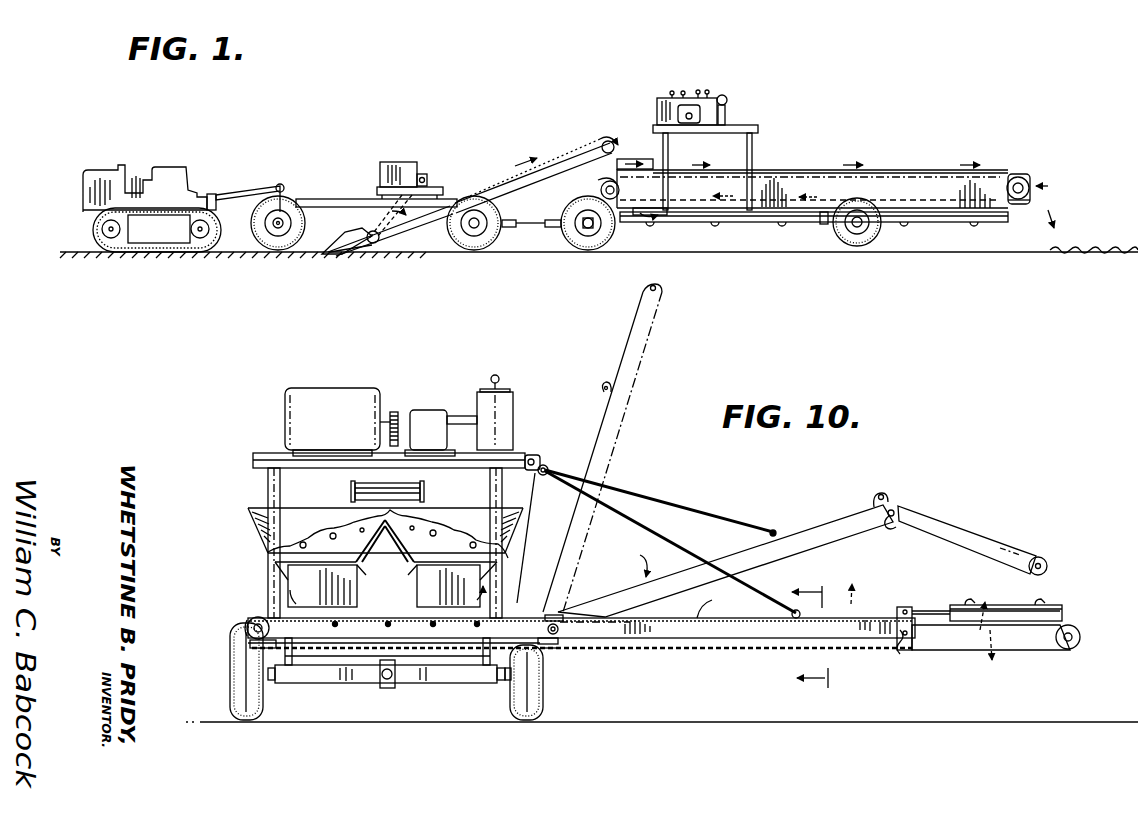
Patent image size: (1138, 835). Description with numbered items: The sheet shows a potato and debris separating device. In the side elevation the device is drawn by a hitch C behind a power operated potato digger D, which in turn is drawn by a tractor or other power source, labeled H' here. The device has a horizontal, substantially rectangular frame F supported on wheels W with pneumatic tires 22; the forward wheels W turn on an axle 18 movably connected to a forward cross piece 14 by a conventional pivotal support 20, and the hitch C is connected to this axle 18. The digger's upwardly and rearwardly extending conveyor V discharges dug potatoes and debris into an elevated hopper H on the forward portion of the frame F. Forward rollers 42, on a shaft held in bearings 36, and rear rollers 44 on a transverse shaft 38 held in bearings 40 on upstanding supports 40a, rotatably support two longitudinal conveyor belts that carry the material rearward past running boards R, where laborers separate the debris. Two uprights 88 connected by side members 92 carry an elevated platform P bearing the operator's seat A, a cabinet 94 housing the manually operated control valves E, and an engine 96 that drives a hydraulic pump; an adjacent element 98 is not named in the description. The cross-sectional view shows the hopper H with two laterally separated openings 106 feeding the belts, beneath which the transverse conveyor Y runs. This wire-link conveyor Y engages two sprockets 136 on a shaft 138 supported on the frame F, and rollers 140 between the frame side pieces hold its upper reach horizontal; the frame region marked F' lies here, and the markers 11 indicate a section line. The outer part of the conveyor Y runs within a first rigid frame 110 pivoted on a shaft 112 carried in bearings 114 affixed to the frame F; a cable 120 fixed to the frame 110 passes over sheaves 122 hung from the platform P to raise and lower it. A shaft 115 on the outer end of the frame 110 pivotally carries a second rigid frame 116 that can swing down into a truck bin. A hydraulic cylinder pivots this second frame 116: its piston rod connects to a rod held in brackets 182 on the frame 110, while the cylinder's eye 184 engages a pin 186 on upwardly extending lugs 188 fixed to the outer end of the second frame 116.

In FIG. 1, the tractor H' is at (156, 197).
In FIG. 1, the potato digger D is at (322, 188).
In FIG. 1, the hitch C is at (520, 226).
In FIG. 1, the conveyor V is at (562, 150).
In FIG. 10, the conveyor V is at (350, 486).
In FIG. 1, the wheels W is at (591, 250).
In FIG. 10, the wheels W is at (236, 700).
In FIG. 1, the pneumatic tires 22 is at (612, 237).
In FIG. 10, the pneumatic tires 22 is at (230, 677).
In FIG. 1, the axle 18 is at (586, 226).
In FIG. 10, the axle 18 is at (502, 672).
In FIG. 1, the hopper H is at (635, 158).
In FIG. 10, the hopper H is at (368, 530).
In FIG. 1, the rollers 42 is at (600, 190).
In FIG. 1, the bearings 36 is at (600, 182).
In FIG. 1, the transverse conveyor Y is at (660, 216).
In FIG. 10, the transverse conveyor Y is at (678, 585).
In FIG. 1, the platform P is at (760, 128).
In FIG. 10, the platform P is at (518, 454).
In FIG. 1, the uprights 88 is at (668, 160).
In FIG. 10, the uprights 88 is at (266, 482).
In FIG. 1, the seat A is at (730, 108).
In FIG. 1, the control valves E is at (705, 92).
In FIG. 1, the cabinet 94 is at (727, 118).
In FIG. 1, the running boards R is at (738, 230).
In FIG. 1, the frame F is at (801, 229).
In FIG. 1, the bearings 40 is at (1026, 180).
In FIG. 1, the supports 40a is at (1018, 177).
In FIG. 1, the shaft 38 is at (1044, 185).
In FIG. 1, the rollers 44 is at (1012, 206).
In FIG. 10, the side members 92 is at (272, 453).
In FIG. 10, the sheaves 122 is at (546, 476).
In FIG. 10, the engine 96 is at (390, 384).
In FIG. 10, the gear 98 is at (398, 414).
In FIG. 10, the openings 106 is at (346, 547).
In FIG. 10, the main frame F' is at (581, 633).
In FIG. 10, the rollers 140 is at (340, 626).
In FIG. 10, the shaft 138 is at (247, 623).
In FIG. 10, the sprockets 136 is at (250, 641).
In FIG. 10, the pivotal support 20 is at (378, 676).
In FIG. 10, the cross piece 14 is at (445, 656).
In FIG. 10, the cable 120 is at (676, 548).
In FIG. 10, the second rigid frame 116 is at (960, 518).
In FIG. 10, the shaft 115 is at (889, 526).
In FIG. 10, the first rigid frame 110 is at (626, 639).
In FIG. 10, the shaft 112 is at (575, 648).
In FIG. 10, the bearings 114 is at (543, 648).
In FIG. 10, the section line 11 is at (809, 632).
In FIG. 10, the brackets 182 is at (906, 612).
In FIG. 10, the eye 184 is at (1063, 615).
In FIG. 10, the pin 186 is at (1062, 606).
In FIG. 10, the lugs 188 is at (1073, 631).